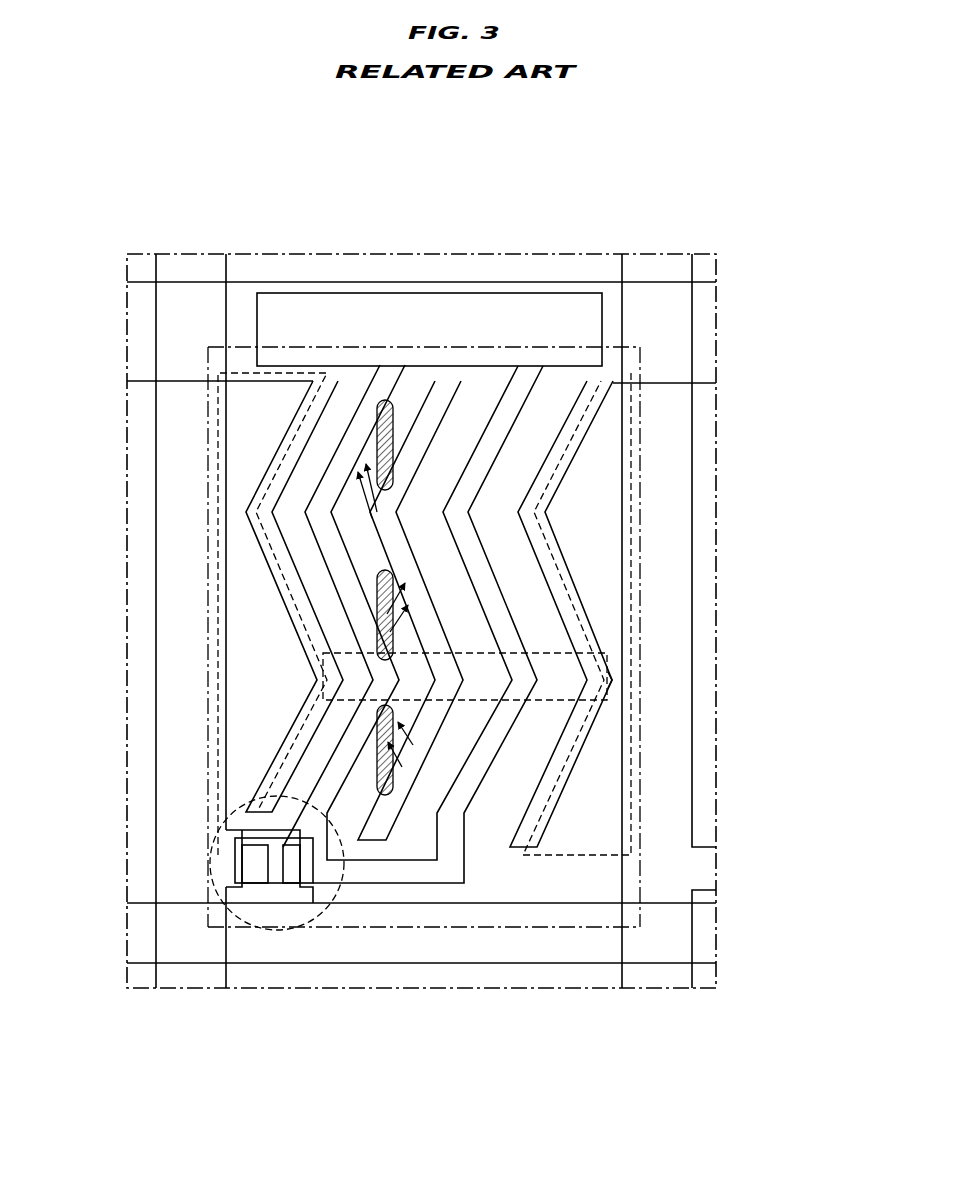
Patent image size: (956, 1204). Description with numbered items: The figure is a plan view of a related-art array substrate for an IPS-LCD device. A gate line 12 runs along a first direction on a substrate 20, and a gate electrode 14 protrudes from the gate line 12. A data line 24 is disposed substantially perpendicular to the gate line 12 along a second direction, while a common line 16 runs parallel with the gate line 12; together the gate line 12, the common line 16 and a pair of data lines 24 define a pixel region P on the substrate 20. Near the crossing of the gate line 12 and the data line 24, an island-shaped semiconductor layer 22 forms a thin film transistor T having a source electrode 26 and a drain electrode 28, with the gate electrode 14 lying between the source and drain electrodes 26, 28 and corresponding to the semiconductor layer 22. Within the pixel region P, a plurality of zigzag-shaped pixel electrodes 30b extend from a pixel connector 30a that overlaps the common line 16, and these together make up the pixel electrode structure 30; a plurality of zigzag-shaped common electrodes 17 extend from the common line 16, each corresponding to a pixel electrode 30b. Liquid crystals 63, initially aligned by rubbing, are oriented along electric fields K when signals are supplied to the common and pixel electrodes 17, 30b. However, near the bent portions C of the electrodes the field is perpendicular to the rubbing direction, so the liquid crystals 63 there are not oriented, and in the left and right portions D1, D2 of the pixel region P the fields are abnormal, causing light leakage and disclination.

The gate line 12 is at (536, 975).
The gate electrode 14 is at (210, 832).
The common line 16 is at (536, 280).
The common electrode 17 is at (565, 587).
The substrate 20 is at (270, 253).
The island-shaped semiconductor layer 22 is at (318, 862).
The data line 24 is at (156, 700).
The source electrode 26 is at (256, 875).
The drain electrode 28 is at (292, 872).
The common electrode 30 is at (551, 588).
The pixel connector 30a is at (583, 326).
The pixel electrode 30b is at (520, 413).
The liquid crystals 63 is at (385, 603).
The bent portion C is at (607, 680).
The left portion D1 is at (213, 490).
The right portion D2 is at (632, 505).
The electric field K is at (607, 655).
The pixel region P is at (692, 768).
The thin film transistor T is at (342, 862).